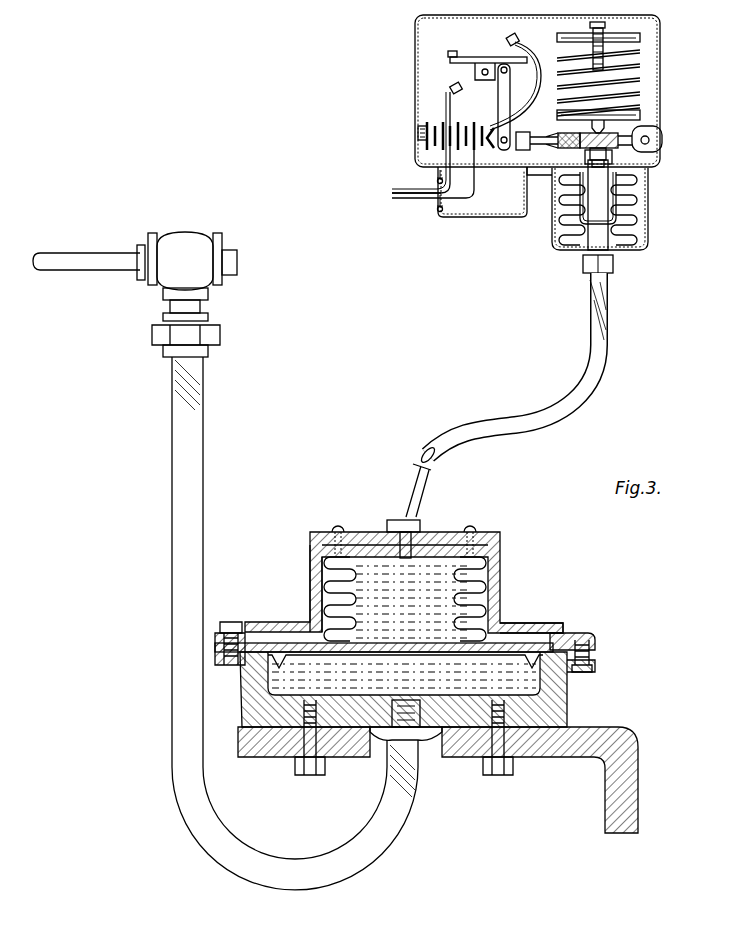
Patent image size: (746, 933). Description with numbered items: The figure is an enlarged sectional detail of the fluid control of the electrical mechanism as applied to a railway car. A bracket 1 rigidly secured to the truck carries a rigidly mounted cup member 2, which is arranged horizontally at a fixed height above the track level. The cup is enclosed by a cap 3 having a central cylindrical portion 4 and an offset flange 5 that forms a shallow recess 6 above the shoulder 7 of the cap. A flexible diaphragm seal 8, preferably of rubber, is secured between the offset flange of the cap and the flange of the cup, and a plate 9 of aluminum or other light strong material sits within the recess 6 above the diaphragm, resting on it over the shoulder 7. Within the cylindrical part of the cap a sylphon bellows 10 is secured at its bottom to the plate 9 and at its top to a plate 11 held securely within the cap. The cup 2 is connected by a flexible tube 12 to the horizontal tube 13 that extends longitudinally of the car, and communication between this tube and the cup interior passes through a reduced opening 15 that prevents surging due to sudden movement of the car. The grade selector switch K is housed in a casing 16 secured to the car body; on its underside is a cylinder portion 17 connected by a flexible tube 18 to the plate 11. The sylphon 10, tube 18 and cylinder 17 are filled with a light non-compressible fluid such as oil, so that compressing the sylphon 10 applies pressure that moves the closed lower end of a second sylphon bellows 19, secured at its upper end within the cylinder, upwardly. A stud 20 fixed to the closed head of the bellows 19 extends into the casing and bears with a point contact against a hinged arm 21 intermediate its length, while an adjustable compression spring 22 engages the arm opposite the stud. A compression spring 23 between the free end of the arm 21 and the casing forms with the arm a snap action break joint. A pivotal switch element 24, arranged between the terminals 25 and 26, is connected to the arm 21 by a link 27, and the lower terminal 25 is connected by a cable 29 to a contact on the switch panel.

The bracket 1 is at (632, 784).
The cup member 2 is at (566, 700).
The cap 3 is at (500, 533).
The central cylindrical portion 4 is at (500, 579).
The offset flange 5 is at (546, 628).
The shallow recess 6 is at (573, 631).
The shoulder 7 is at (595, 661).
The flexible diaphragm seal 8 is at (318, 657).
The plate 9 is at (365, 646).
The sylphon bellows 10 is at (340, 601).
The plate 11 is at (316, 549).
The flexible tube 12 is at (193, 575).
The horizontal tube 13 is at (90, 254).
The reduced opening 15 is at (406, 700).
The casing 16 is at (663, 153).
The cylinder portion 17 is at (649, 181).
The flexible tube 18 is at (591, 304).
The sylphon bellows 19 is at (645, 201).
The stud 20 is at (600, 232).
The hinged arm 21 is at (660, 131).
The adjustable compression spring 22 is at (640, 110).
The compression spring 23 is at (430, 142).
The pivotal switch element 24 is at (478, 57).
The terminal 25 is at (449, 90).
The terminal 26 is at (519, 42).
The link 27 is at (498, 102).
The cable 29 is at (413, 193).
The grade selector switch K is at (415, 70).